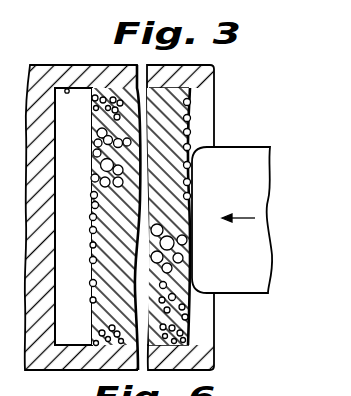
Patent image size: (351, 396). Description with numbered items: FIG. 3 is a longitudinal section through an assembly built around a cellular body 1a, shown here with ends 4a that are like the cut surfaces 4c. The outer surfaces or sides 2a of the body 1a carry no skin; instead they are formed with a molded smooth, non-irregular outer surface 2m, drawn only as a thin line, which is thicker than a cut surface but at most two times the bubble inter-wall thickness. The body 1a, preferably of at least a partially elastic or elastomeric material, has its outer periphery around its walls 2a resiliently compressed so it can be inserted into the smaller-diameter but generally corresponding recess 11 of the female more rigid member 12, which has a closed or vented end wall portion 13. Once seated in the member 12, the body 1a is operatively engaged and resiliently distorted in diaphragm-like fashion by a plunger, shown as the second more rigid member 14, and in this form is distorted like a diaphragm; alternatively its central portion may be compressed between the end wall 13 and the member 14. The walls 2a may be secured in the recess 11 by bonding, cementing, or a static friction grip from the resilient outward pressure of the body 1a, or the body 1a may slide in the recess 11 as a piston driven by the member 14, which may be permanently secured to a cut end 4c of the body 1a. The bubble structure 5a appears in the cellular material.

The recess 11 is at (68, 88).
The female more rigid member 12 is at (88, 65).
The end wall portion 13 is at (73, 216).
The second more rigid member 14 is at (247, 147).
The pores 5a is at (96, 154).
The cut surfaces 4c is at (98, 187).
The ends 4a is at (90, 295).
The outer surfaces or sides 2a is at (90, 371).
The body 1a is at (192, 333).
The molded smooth outer surface 2m is at (208, 354).